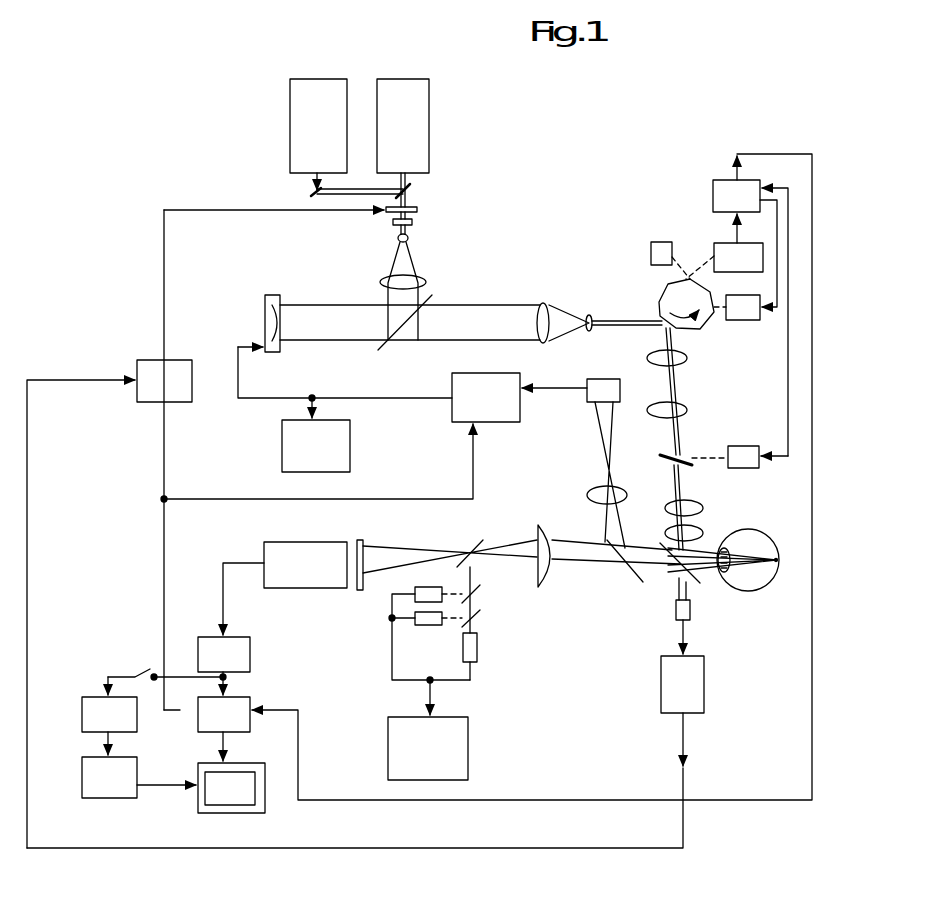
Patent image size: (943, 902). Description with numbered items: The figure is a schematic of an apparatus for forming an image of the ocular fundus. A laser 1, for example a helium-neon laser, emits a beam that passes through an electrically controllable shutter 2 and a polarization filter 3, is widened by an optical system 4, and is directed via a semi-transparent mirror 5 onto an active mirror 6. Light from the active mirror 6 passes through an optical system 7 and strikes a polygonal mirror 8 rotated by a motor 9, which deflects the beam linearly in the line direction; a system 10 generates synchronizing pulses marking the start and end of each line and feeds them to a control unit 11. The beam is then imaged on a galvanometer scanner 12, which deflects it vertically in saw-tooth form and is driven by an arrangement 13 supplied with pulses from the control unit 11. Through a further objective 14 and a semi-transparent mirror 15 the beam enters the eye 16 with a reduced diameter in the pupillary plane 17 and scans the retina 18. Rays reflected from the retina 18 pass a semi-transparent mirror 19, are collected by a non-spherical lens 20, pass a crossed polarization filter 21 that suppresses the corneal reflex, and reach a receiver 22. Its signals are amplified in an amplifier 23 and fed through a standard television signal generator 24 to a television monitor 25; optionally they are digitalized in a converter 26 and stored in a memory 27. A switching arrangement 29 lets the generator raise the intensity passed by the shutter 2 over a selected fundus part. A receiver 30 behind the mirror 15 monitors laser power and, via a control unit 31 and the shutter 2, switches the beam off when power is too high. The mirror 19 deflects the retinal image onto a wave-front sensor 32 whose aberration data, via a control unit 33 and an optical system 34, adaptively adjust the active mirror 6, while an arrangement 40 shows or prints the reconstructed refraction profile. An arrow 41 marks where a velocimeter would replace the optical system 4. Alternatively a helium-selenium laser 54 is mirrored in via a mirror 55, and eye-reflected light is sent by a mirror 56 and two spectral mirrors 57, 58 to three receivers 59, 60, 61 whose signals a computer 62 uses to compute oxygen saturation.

The laser 1 is at (429, 118).
The shutter 2 is at (418, 210).
The polarization filter 3 is at (393, 223).
The optical system 4 is at (427, 283).
The semi-transparent mirror 5 is at (432, 298).
The active mirror 6 is at (268, 295).
The optical system 7 is at (548, 310).
The polygonal mirror 8 is at (698, 330).
The motor 9 is at (738, 322).
The system 10 is at (725, 250).
The control unit 11 is at (683, 408).
The galvanometer scanner 12 is at (680, 455).
The arrangement 13 is at (752, 468).
The objective 14 is at (700, 530).
The semi-transparent mirror 15 is at (690, 578).
The eye 16 is at (757, 540).
The pupillary plane 17 is at (722, 578).
The retina 18 is at (778, 573).
The semi-transparent mirror 19 is at (630, 583).
The non-spherical lens 20 is at (540, 528).
The polarization filter 21 is at (361, 540).
The receiver 22 is at (308, 546).
The amplifier 23 is at (250, 655).
The standard television signal generator 24 is at (235, 712).
The television monitor 25 is at (230, 790).
The converter 26 is at (90, 705).
The memory 27 is at (90, 765).
The switching arrangement 29 is at (148, 365).
The receiver 30 is at (676, 606).
The control unit 31 is at (694, 702).
The wave-front sensor 32 is at (600, 392).
The control unit 33 is at (470, 410).
The optical system 34 is at (592, 497).
The arrangement 40 is at (297, 446).
The arrow 41 is at (470, 242).
The helium-selenium laser 54 is at (290, 118).
The mirror 55 is at (412, 190).
The mirror 56 is at (472, 548).
The spectral mirror 57 is at (480, 590).
The spectral mirror 58 is at (480, 618).
The receiver 59 is at (400, 594).
The receiver 60 is at (428, 626).
The receiver 61 is at (477, 655).
The computer 62 is at (460, 748).